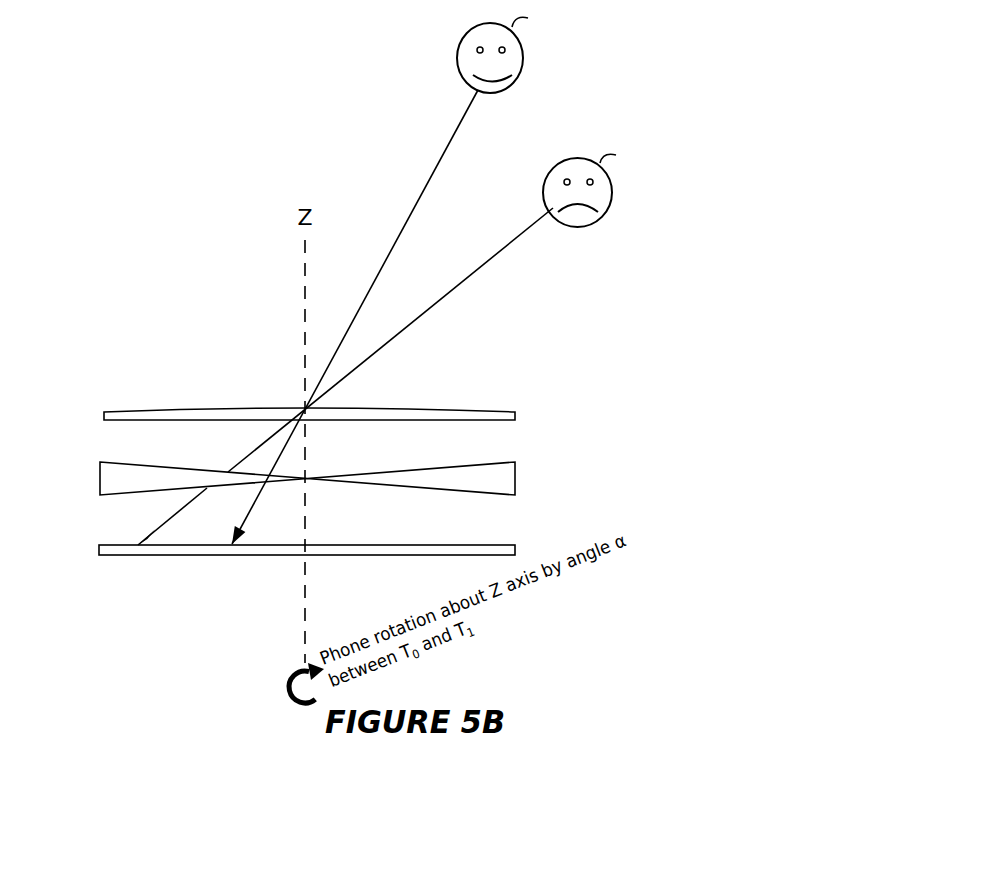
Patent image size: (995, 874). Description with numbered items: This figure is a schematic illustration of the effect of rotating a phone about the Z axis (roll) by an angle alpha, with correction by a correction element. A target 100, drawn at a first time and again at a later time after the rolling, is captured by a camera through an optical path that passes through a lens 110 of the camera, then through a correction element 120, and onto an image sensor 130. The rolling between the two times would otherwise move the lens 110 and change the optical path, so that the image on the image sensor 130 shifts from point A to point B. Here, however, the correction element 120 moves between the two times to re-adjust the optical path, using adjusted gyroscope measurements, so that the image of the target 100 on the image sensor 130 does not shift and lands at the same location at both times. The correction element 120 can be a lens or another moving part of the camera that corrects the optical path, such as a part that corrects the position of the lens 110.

The target 100 is at (596, 114).
The lens 110 is at (515, 413).
The correction element 120 is at (515, 476).
The image sensor 130 is at (515, 545).